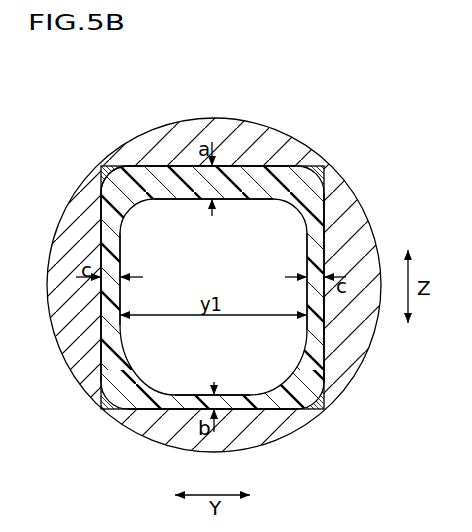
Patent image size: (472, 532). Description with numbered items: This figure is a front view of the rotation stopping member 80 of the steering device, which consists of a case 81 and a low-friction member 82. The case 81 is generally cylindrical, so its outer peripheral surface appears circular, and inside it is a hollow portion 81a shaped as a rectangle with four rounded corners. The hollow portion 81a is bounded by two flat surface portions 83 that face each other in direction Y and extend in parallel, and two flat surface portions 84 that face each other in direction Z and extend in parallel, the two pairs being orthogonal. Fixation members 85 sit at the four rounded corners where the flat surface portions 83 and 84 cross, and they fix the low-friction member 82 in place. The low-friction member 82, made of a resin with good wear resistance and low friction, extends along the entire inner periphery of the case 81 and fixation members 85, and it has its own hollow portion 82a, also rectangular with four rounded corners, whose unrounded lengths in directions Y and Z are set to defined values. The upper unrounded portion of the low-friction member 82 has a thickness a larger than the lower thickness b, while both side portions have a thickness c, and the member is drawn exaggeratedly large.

The rotation stopping member 80 is at (214, 257).
The case 81 is at (224, 131).
The hollow portion 81a is at (105, 187).
The low-friction member 82 is at (273, 150).
The hollow portion 82a is at (130, 165).
The flat surface portions 83 is at (114, 247).
The flat surface portions 84 is at (236, 192).
The fixation members 85 is at (312, 167).